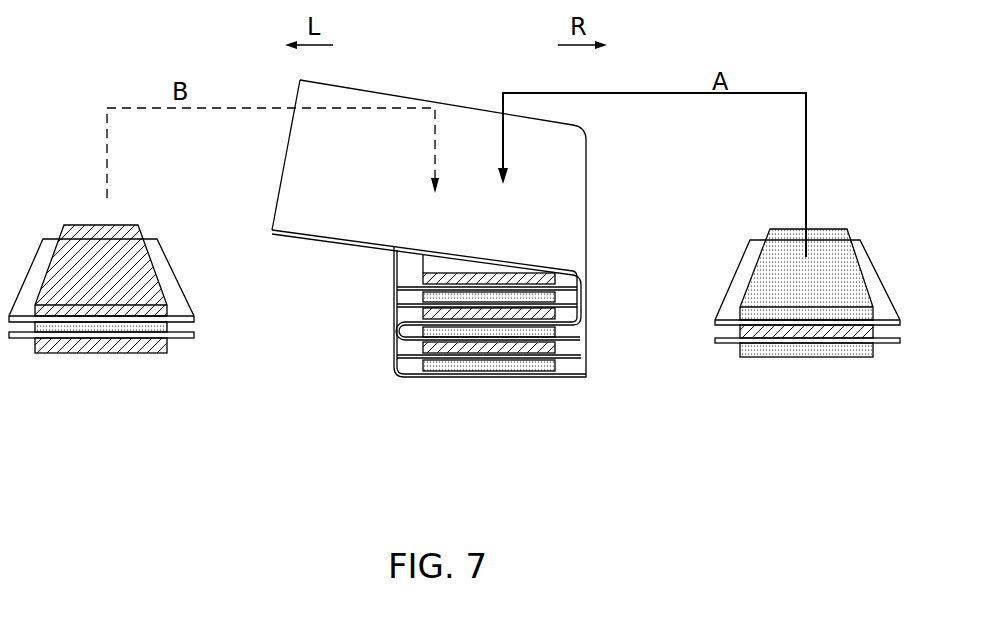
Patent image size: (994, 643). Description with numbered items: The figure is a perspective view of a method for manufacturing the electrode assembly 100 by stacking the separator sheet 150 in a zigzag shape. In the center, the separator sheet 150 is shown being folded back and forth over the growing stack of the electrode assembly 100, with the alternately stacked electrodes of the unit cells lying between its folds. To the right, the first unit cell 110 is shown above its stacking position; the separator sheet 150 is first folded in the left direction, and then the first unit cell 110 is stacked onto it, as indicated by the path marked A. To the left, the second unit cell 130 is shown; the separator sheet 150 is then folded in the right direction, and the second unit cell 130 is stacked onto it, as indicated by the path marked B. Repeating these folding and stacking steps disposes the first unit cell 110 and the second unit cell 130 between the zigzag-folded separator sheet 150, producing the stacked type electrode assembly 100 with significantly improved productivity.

The electrode assembly 100 is at (505, 400).
The first unit cell 110 is at (829, 196).
The second unit cell 130 is at (137, 192).
The separator sheet 150 is at (459, 122).